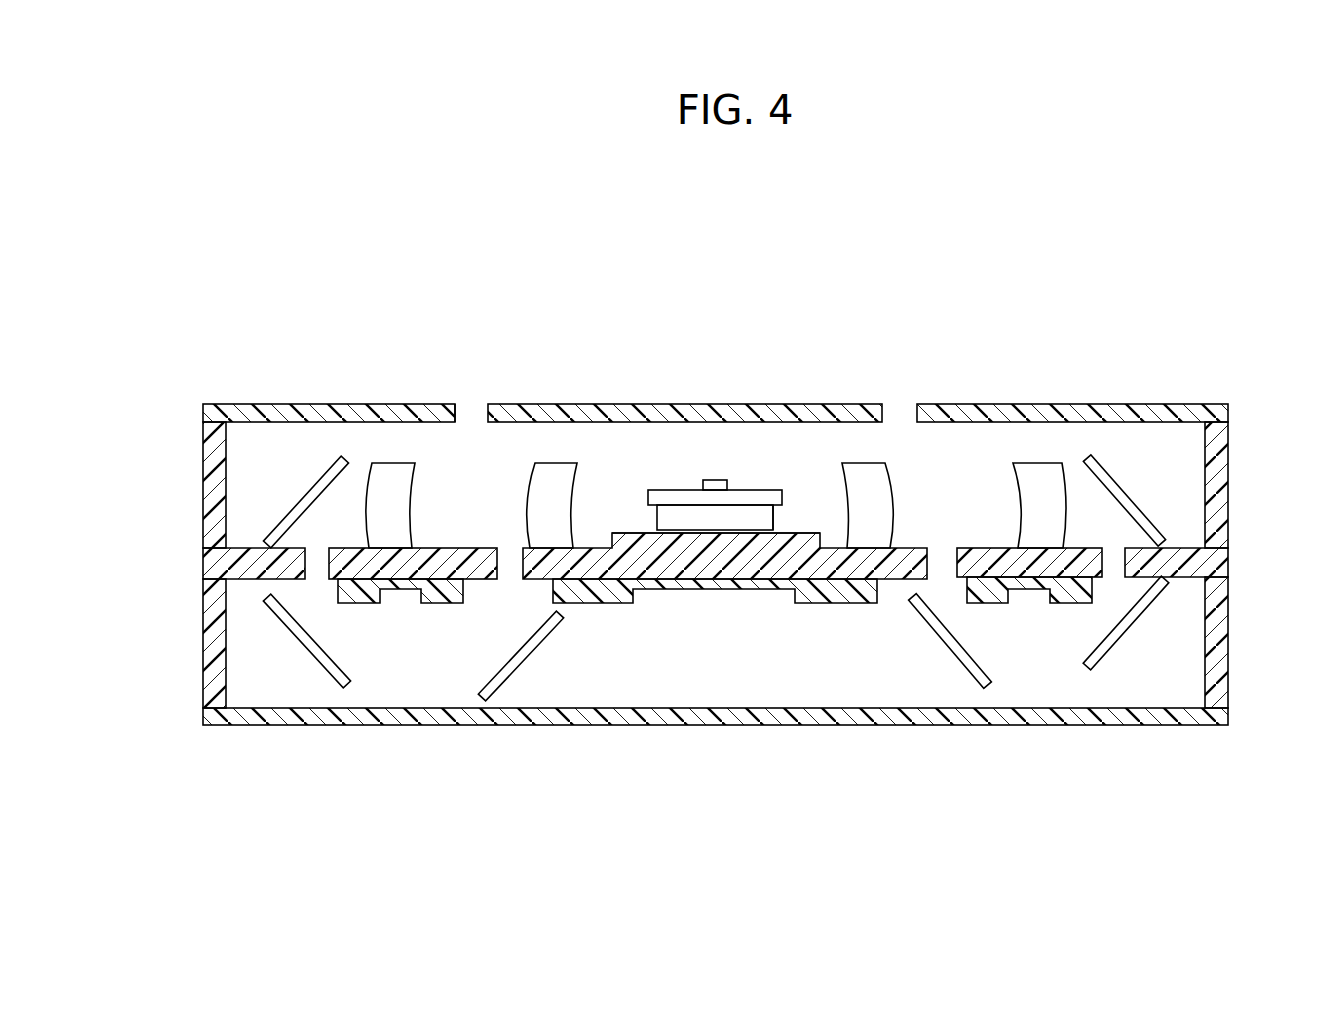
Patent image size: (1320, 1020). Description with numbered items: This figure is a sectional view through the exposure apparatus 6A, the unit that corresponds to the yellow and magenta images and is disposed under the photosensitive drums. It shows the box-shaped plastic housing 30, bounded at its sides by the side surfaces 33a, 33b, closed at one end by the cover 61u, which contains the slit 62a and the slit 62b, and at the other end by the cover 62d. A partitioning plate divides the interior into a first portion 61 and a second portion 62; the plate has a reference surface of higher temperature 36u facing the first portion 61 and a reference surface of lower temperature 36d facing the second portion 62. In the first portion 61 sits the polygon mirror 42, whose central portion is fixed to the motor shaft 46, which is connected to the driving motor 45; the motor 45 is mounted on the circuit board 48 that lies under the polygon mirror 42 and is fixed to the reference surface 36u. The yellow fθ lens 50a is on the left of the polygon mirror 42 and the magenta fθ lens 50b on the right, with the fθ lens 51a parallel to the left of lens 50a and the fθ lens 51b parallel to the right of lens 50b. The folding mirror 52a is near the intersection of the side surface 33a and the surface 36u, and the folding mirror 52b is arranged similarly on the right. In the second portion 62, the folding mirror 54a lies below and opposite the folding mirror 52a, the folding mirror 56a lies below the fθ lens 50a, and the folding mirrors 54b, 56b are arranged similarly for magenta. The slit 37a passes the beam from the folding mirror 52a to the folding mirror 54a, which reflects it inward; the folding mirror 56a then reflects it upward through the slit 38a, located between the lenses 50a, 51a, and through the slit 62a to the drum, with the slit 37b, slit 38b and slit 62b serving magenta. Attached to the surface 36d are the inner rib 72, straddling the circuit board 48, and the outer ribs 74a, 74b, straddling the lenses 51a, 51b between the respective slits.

The exposure apparatus 6A is at (339, 224).
The housing 30 is at (691, 539).
The side surface 33a is at (217, 680).
The side surface 33b is at (1235, 460).
The reference surface of lower temperature 36d is at (257, 579).
The reference surface of higher temperature 36u is at (957, 565).
The slit 37a is at (318, 566).
The slit 37b is at (1125, 567).
The slit 38a is at (513, 565).
The slit 38b is at (937, 565).
The polygon mirror 42 is at (662, 497).
The driving motor 45 is at (762, 517).
The motor shaft 46 is at (713, 477).
The circuit board 48 is at (625, 540).
The fθ lens 50a is at (551, 476).
The fθ lens 50b is at (865, 467).
The fθ lens 51a is at (393, 478).
The fθ lens 51b is at (1035, 475).
The folding mirror 52a is at (320, 482).
The folding mirror 52b is at (1112, 487).
The folding mirror 54a is at (303, 640).
The folding mirror 54b is at (1113, 638).
The folding mirror 56a is at (522, 657).
The folding mirror 56b is at (942, 638).
The first portion 61 is at (241, 478).
The cover 61u is at (225, 412).
The second portion 62 is at (1185, 633).
The slit 62a is at (457, 408).
The slit 62b is at (917, 405).
The cover 62d is at (1215, 715).
The inner rib 72 is at (716, 628).
The outer rib 74a is at (406, 628).
The outer rib 74b is at (1039, 626).